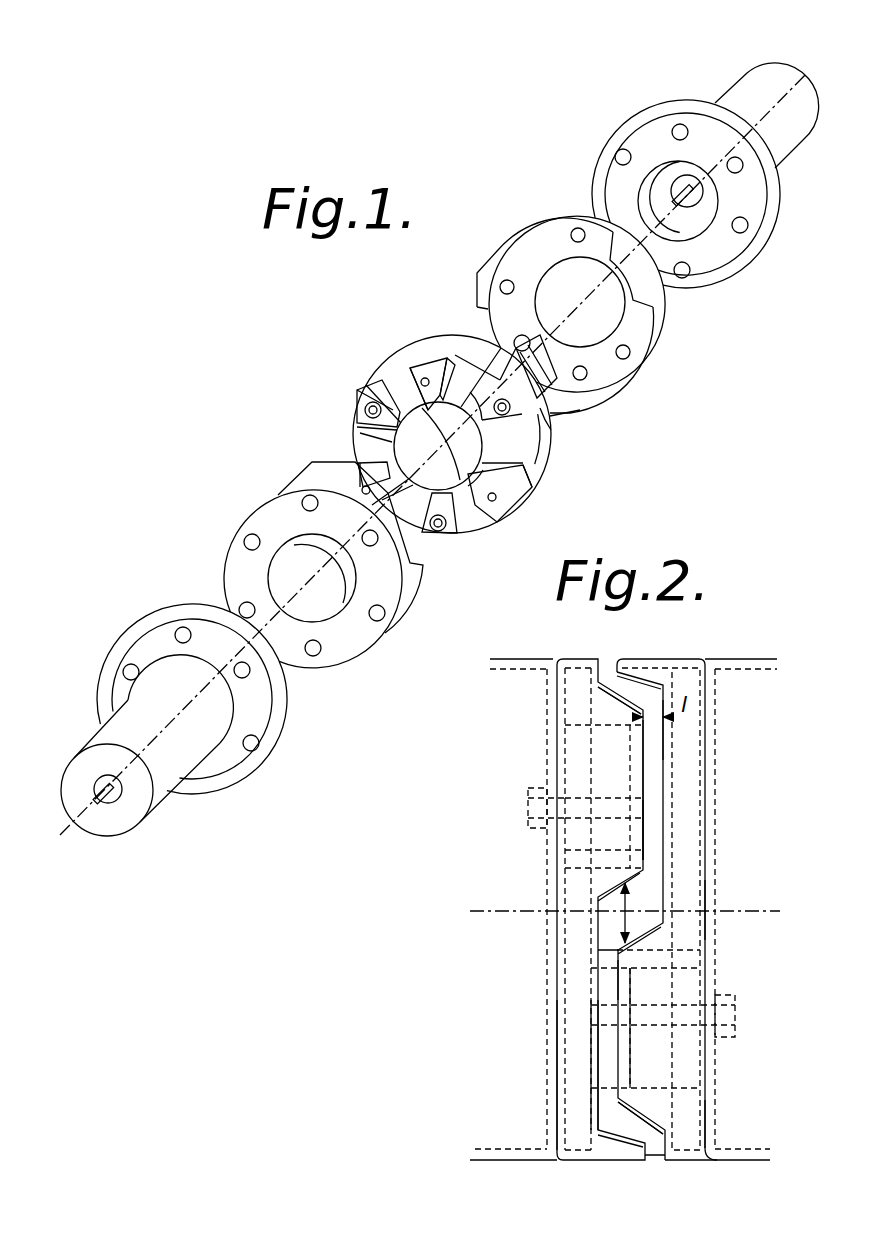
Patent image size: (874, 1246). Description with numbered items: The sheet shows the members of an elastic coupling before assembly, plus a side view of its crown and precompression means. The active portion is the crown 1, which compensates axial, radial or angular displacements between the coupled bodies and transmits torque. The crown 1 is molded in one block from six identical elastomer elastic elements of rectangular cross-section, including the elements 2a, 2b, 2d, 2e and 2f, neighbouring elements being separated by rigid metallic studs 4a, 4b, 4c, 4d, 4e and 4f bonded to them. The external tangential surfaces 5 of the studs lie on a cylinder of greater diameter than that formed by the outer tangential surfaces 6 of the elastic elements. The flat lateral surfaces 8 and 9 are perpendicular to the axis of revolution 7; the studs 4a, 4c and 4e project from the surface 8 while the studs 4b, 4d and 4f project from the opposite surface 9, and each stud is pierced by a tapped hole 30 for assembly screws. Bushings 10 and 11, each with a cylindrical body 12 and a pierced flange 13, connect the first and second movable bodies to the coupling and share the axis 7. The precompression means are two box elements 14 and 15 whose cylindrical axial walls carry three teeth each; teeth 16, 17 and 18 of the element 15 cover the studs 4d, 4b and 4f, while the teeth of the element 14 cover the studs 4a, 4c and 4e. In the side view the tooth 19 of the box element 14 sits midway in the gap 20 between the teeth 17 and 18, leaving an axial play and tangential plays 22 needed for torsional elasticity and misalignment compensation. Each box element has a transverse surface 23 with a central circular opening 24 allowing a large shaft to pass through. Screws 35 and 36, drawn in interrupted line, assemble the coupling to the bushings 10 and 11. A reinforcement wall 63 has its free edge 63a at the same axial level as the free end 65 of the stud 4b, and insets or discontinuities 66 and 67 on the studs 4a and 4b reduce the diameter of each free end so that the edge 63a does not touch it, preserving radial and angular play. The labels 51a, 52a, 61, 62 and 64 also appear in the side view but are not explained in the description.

In FIG. 1, the crown 1 is at (398, 335).
In FIG. 1, the elastic element 2a is at (397, 390).
In FIG. 1, the elastic element 2b is at (458, 419).
In FIG. 1, the elastic element 2d is at (472, 525).
In FIG. 1, the elastic element 2e is at (413, 522).
In FIG. 1, the elastic element 2f is at (373, 435).
In FIG. 1, the rigid stud 4a is at (462, 335).
In FIG. 2, the rigid stud 4a is at (610, 757).
In FIG. 1, the rigid stud 4b is at (510, 460).
In FIG. 2, the rigid stud 4b is at (685, 983).
In FIG. 1, the rigid stud 4c is at (470, 512).
In FIG. 1, the rigid stud 4d is at (435, 522).
In FIG. 1, the rigid stud 4e is at (388, 470).
In FIG. 1, the rigid stud 4f is at (367, 398).
In FIG. 1, the external tangential surface of stud 5 is at (442, 337).
In FIG. 1, the outer tangential surface of elastic element 6 is at (483, 383).
In FIG. 1, the axis of revolution 7 is at (350, 547).
In FIG. 2, the axis of revolution 7 is at (733, 912).
In FIG. 1, the lateral surface 8 is at (523, 467).
In FIG. 1, the lateral surface 9 is at (560, 432).
In FIG. 1, the bushing 10 is at (174, 718).
In FIG. 2, the bushing 10 is at (520, 680).
In FIG. 1, the bushing 11 is at (664, 92).
In FIG. 2, the bushing 11 is at (757, 680).
In FIG. 1, the cylindrical body 12 is at (160, 782).
In FIG. 1, the flange 13 is at (168, 615).
In FIG. 1, the box element 14 is at (298, 595).
In FIG. 2, the box element 14 is at (617, 910).
In FIG. 1, the box element 15 is at (663, 347).
In FIG. 2, the box element 15 is at (649, 910).
In FIG. 1, the tooth 16 is at (572, 398).
In FIG. 1, the tooth 17 is at (655, 297).
In FIG. 2, the tooth 17 is at (649, 670).
In FIG. 1, the tooth 18 is at (493, 272).
In FIG. 2, the tooth 18 is at (648, 993).
In FIG. 2, the tooth 19 is at (637, 765).
In FIG. 2, the gap 20 is at (655, 835).
In FIG. 2, the tangential plays 22 is at (638, 905).
In FIG. 1, the transverse surface 23 is at (290, 510).
In FIG. 1, the central circular opening 24 is at (296, 576).
In FIG. 1, the tapped hole 30 is at (533, 420).
In FIG. 2, the screw 35 is at (528, 806).
In FIG. 2, the screw 36 is at (735, 1015).
In FIG. 2, the ramp surface 51a is at (587, 717).
In FIG. 2, the ramp surface 52a is at (672, 1122).
In FIG. 2, the flange wall 61 is at (563, 1073).
In FIG. 2, the hub wall 62 is at (703, 1133).
In FIG. 1, the reinforcement wall 63 is at (547, 223).
In FIG. 2, the reinforcement wall 63 is at (577, 1080).
In FIG. 2, the free edge 63a is at (597, 1073).
In FIG. 2, the gap 64 is at (670, 743).
In FIG. 2, the free end 65 is at (593, 983).
In FIG. 1, the inset or discontinuity 66 is at (457, 338).
In FIG. 1, the inset or discontinuity 67 is at (568, 412).